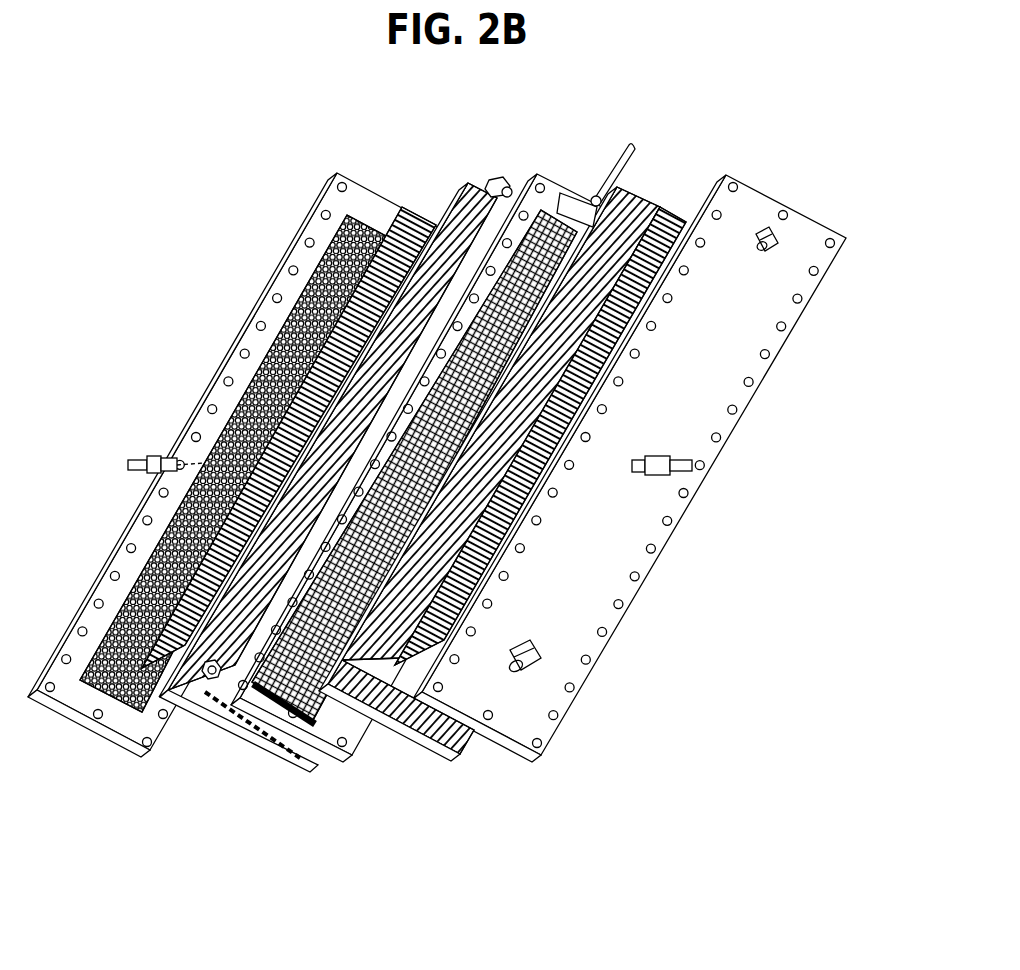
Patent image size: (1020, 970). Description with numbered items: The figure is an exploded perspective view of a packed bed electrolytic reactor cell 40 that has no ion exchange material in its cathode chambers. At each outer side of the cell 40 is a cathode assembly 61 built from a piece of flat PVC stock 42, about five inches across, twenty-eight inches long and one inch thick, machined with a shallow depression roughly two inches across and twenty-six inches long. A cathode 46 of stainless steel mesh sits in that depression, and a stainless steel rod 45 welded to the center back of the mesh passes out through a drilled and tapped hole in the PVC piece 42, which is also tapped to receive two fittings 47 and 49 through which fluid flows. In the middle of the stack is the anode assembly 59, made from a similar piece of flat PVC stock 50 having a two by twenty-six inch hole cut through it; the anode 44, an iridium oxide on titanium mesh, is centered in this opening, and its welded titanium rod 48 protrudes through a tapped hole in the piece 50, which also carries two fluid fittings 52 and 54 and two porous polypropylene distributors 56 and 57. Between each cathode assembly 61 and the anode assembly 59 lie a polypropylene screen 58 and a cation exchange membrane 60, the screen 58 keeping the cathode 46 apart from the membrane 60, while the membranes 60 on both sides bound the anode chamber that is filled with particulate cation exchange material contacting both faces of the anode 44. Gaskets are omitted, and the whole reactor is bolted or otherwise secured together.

The cell 40 is at (273, 220).
The flat PVC stock 42 is at (255, 290).
The anode 44 is at (305, 712).
The stainless steel rods 45 is at (128, 465).
The cathodes 46 is at (258, 390).
The fitting 47 is at (779, 240).
The titanium rod 48 is at (634, 159).
The fitting 49 is at (540, 660).
The flat PVC stock 50 is at (262, 697).
The fitting 52 is at (216, 680).
The fitting 54 is at (488, 183).
The porous polypropylene distributor 56 is at (575, 196).
The porous polypropylene distributor 57 is at (318, 722).
The polypropylene screen 58 is at (140, 670).
The anode assembly 59 is at (530, 170).
The cation exchange membranes 60 is at (183, 706).
The cathode assemblies 61 is at (210, 338).